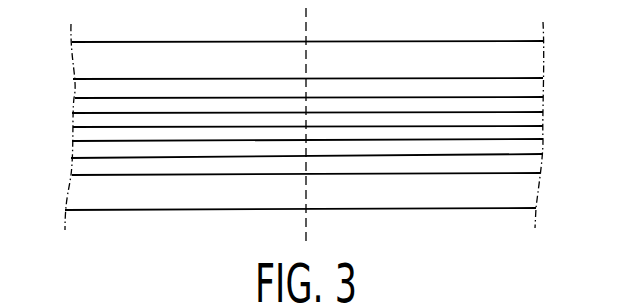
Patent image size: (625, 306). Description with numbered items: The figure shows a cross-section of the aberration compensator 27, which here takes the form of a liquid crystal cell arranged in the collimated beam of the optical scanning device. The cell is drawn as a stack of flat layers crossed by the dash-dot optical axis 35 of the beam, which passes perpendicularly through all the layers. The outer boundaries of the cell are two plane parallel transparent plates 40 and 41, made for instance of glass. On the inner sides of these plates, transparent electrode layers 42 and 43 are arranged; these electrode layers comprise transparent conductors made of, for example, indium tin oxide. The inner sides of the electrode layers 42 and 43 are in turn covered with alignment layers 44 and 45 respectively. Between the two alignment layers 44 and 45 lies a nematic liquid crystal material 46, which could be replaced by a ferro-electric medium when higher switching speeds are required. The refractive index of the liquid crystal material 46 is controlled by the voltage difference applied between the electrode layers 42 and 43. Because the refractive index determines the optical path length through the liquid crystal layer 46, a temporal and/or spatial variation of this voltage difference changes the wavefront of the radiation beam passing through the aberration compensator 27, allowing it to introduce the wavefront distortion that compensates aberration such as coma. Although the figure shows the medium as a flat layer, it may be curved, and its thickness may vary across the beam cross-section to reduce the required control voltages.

The aberration compensator 27 is at (476, 14).
The optical axis 35 is at (306, 17).
The transparent plate 40 is at (530, 49).
The transparent plate 41 is at (530, 202).
The transparent electrode layer 42 is at (530, 81).
The transparent electrode layer 43 is at (530, 167).
The alignment layer 44 is at (530, 104).
The alignment layer 45 is at (530, 149).
The nematic liquid crystal material 46 is at (530, 121).